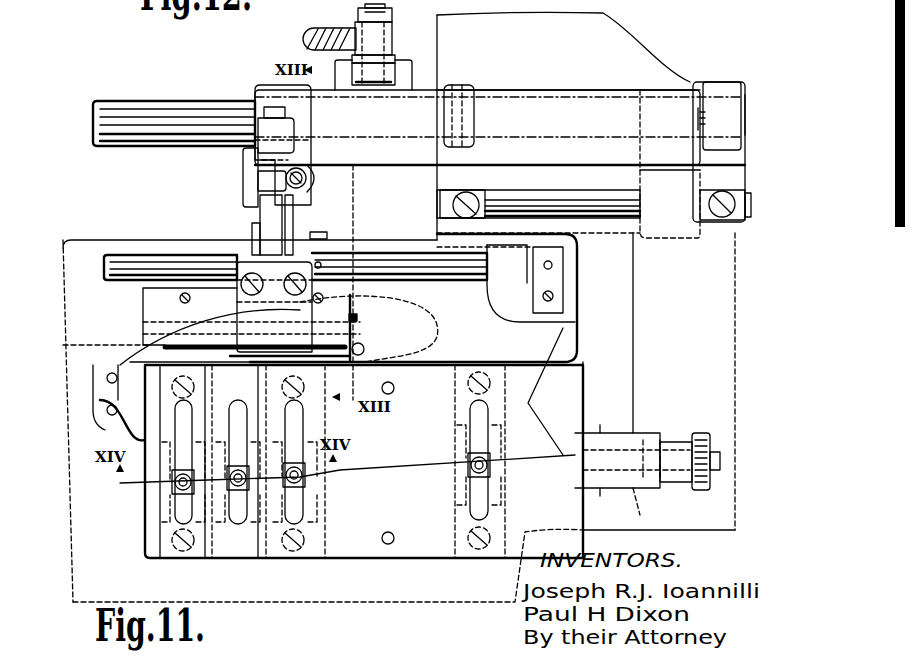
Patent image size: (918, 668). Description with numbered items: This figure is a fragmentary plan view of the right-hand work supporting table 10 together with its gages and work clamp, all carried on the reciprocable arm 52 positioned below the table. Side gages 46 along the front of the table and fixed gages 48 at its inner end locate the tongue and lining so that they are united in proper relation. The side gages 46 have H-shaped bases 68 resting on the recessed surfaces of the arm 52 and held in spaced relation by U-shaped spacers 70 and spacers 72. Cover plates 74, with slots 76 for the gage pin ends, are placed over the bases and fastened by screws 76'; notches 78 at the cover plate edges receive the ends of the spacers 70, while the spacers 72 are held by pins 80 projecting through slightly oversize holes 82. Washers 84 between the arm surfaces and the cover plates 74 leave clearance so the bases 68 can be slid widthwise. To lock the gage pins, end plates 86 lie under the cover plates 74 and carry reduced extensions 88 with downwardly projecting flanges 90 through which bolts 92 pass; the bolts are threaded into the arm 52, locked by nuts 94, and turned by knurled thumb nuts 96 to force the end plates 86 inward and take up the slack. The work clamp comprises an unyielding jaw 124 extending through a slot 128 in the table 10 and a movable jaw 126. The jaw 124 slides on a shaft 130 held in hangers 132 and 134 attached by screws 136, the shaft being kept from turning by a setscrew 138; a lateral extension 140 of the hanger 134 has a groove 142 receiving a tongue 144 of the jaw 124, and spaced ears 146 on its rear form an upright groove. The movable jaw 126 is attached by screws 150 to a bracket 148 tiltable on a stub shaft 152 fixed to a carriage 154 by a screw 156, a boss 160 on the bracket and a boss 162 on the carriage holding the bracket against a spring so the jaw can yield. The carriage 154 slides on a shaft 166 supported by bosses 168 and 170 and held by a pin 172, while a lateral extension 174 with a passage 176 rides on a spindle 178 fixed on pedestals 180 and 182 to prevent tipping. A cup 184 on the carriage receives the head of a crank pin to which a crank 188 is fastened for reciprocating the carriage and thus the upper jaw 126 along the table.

The table 10 is at (737, 363).
The side gages 46 is at (232, 483).
The gages 48 is at (107, 410).
The reciprocable arm 52 is at (645, 55).
The H-shaped bases 68 is at (172, 525).
The U-shaped spacers 70 is at (272, 540).
The spacers 72 is at (463, 548).
The cover plates 74 is at (335, 560).
The slots 76 is at (331, 462).
The screws 76' is at (307, 479).
The notches 78 is at (262, 556).
The pins 80 is at (389, 394).
The holes 82 is at (394, 392).
The washers 84 is at (196, 387).
The end plates 86 is at (494, 548).
The reduced extensions 88 is at (618, 432).
The flanges 90 is at (668, 486).
The bolts 92 is at (668, 447).
The nuts 94 is at (648, 509).
The knurled thumb nuts 96 is at (700, 432).
The unyielding jaw 124 is at (364, 350).
The movable jaw 126 is at (165, 346).
The slot 128 is at (400, 358).
The shaft 130 is at (440, 256).
The shaft hanger 132 is at (563, 283).
The shaft hanger 134 is at (335, 285).
The screws 136 is at (582, 300).
The setscrew 138 is at (318, 232).
The lateral extension 140 is at (142, 302).
The groove 142 is at (352, 312).
The tongue 144 is at (395, 322).
The spaced ears 146 is at (254, 228).
The bracket 148 is at (260, 214).
The screws 150 is at (290, 288).
The stub shaft 152 is at (316, 183).
The carriage 154 is at (503, 90).
The screw 156 is at (310, 179).
The boss 160 is at (256, 184).
The boss 162 is at (262, 123).
The shaft 166 is at (545, 100).
The boss 168 is at (725, 84).
The boss 170 is at (466, 86).
The pin 172 is at (455, 82).
The lateral extension 174 is at (715, 220).
The passage 176 is at (658, 198).
The spindle 178 is at (582, 198).
The pedestal 180 is at (730, 190).
The pedestal 182 is at (480, 197).
The cup 184 is at (395, 60).
The crank 188 is at (310, 29).